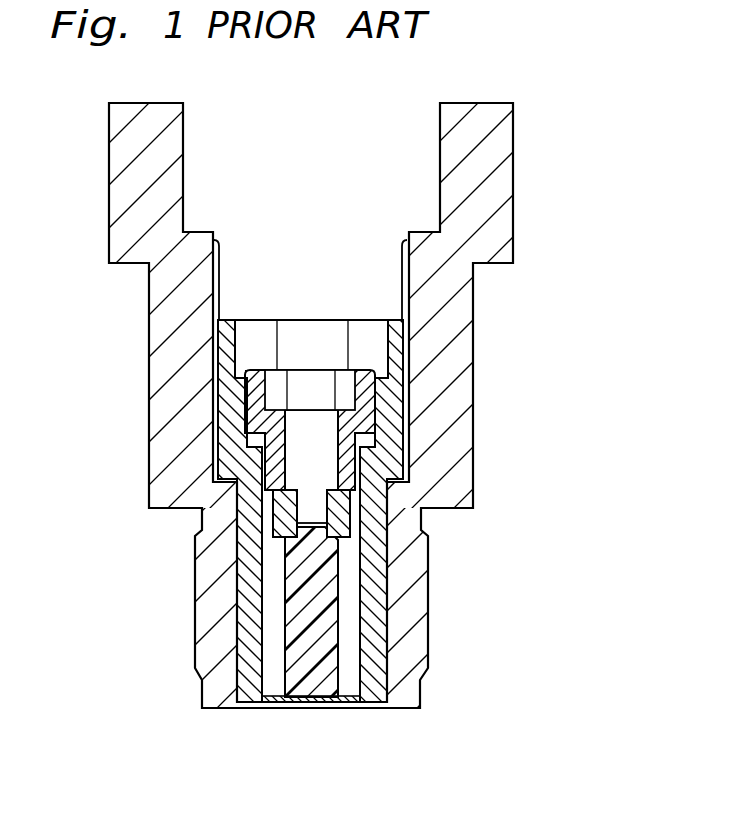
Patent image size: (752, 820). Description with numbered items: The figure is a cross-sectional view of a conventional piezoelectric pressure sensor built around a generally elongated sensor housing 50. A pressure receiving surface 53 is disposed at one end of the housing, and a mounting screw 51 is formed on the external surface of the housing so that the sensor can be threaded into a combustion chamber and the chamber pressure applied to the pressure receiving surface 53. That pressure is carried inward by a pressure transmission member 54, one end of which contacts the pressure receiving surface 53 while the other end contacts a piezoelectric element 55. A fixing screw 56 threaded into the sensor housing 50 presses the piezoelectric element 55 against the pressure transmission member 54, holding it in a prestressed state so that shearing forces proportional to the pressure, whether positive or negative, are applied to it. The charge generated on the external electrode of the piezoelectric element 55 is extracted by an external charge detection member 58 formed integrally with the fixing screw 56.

The sensor housing 50 is at (458, 353).
The mounting screw 51 is at (428, 652).
The pressure receiving surface 53 is at (258, 710).
The pressure transmission member 54 is at (337, 613).
The piezoelectric element 55 is at (337, 530).
The fixing screw 56 is at (373, 415).
The external charge detection member 58 is at (357, 467).